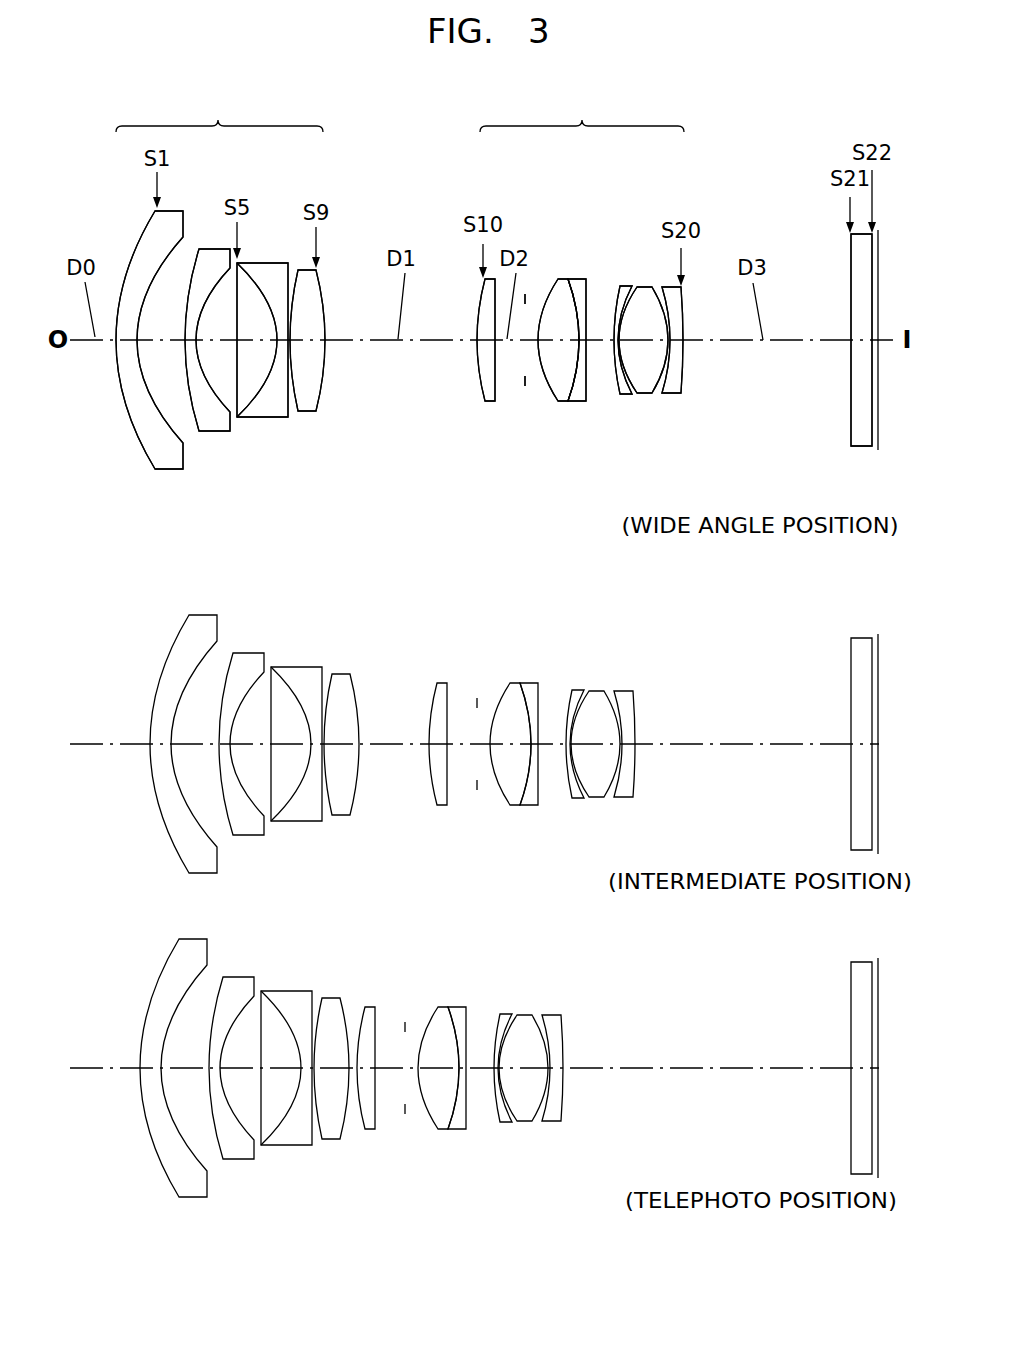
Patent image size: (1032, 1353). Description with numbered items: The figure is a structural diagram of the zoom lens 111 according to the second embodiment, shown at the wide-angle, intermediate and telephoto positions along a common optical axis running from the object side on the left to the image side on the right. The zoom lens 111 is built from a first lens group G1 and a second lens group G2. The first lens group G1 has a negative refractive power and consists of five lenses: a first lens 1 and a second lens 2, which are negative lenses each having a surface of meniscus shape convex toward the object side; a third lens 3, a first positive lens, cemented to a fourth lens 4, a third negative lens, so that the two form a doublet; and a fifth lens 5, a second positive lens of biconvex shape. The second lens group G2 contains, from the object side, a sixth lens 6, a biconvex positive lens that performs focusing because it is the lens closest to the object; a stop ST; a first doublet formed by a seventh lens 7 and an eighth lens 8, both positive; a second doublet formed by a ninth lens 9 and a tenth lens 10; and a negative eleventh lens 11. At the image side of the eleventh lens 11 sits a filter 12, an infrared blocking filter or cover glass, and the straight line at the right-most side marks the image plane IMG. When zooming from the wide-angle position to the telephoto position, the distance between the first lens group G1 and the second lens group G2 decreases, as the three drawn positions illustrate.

The first lens 1 is at (172, 464).
The second lens 2 is at (217, 430).
The third lens 3 is at (244, 409).
The fourth lens 4 is at (273, 412).
The fifth lens 5 is at (311, 414).
The sixth lens 6 is at (485, 393).
The seventh lens 7 is at (559, 392).
The eighth lens 8 is at (579, 395).
The ninth lens 9 is at (626, 392).
The tenth lens 10 is at (645, 393).
The eleventh lens 11 is at (675, 393).
The filter 12 is at (858, 442).
The zoom lens 111 is at (808, 492).
The first lens group G1 is at (219, 113).
The second lens group G2 is at (582, 113).
The stop ST is at (525, 381).
The image plane IMG is at (878, 230).